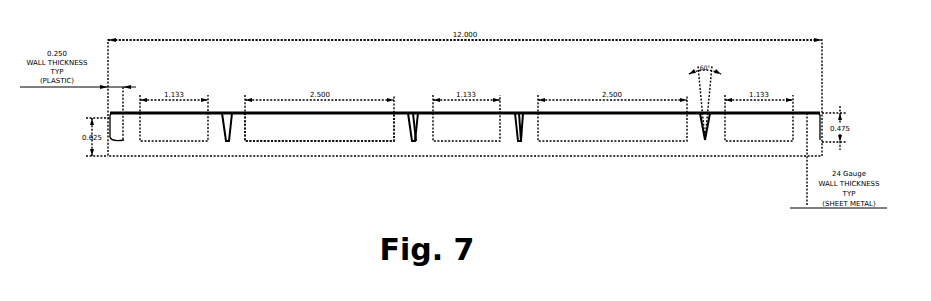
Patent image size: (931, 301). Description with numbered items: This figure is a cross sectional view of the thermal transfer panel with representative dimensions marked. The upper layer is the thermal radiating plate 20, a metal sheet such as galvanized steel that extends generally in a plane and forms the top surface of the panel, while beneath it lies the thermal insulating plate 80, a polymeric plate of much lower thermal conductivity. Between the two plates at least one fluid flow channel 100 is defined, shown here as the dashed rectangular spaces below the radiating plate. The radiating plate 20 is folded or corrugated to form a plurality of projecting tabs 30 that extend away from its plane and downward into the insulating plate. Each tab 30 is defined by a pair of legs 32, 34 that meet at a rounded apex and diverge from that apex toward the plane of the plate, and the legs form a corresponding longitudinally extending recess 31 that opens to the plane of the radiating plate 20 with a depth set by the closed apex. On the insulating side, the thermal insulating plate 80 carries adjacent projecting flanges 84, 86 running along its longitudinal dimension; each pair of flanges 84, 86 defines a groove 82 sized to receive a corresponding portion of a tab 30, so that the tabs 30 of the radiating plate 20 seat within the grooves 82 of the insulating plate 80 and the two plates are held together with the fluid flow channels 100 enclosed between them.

The thermal radiating plate 20 is at (410, 116).
The projecting tab 30 is at (126, 139).
The recess 31 is at (414, 120).
The leg 32 is at (702, 130).
The leg 34 is at (708, 130).
The thermal insulating plate 80 is at (306, 143).
The groove 82 is at (414, 130).
The projecting flange 84 is at (214, 136).
The projecting flange 86 is at (236, 134).
The fluid flow channel 100 is at (332, 136).